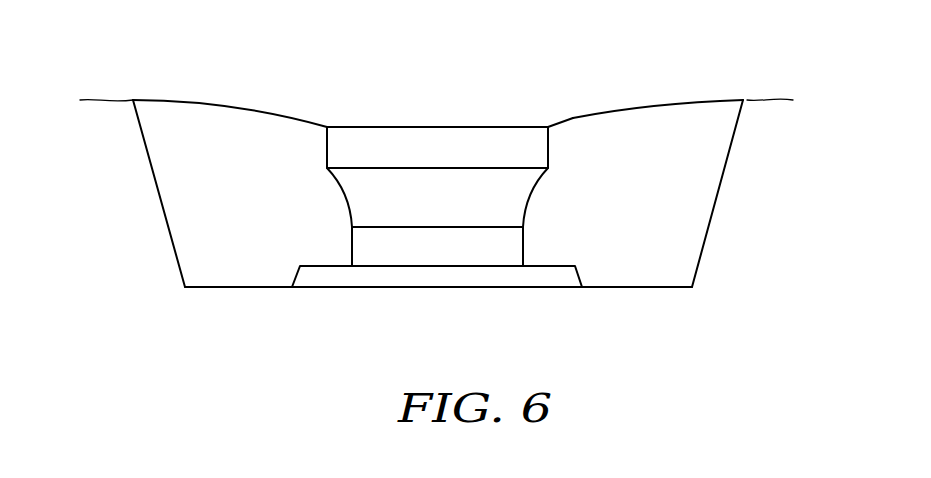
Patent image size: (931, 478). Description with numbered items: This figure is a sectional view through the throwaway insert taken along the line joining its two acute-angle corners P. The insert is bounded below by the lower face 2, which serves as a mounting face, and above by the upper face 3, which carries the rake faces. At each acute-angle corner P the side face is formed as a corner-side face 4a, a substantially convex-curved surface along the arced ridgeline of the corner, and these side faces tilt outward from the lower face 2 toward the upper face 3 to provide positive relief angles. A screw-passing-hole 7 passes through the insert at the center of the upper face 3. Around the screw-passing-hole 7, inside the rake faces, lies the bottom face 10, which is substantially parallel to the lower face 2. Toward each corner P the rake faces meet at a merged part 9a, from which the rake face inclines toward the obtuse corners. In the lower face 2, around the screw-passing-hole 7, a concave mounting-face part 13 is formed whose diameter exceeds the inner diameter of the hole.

The lower face 2 is at (618, 290).
The upper face 3 is at (437, 191).
The corner-side face 4a is at (158, 195).
The screw-passing-hole 7 is at (328, 146).
The merged part 9a is at (217, 105).
The bottom face 10 is at (574, 118).
The concave mounting-face part 13 is at (298, 273).
The acute-angle corner P is at (436, 102).